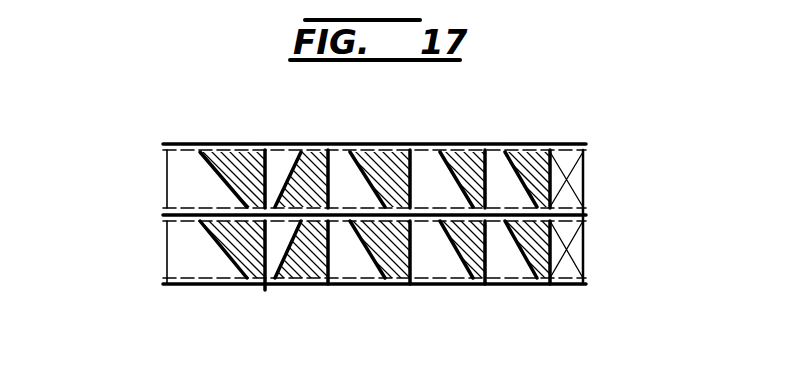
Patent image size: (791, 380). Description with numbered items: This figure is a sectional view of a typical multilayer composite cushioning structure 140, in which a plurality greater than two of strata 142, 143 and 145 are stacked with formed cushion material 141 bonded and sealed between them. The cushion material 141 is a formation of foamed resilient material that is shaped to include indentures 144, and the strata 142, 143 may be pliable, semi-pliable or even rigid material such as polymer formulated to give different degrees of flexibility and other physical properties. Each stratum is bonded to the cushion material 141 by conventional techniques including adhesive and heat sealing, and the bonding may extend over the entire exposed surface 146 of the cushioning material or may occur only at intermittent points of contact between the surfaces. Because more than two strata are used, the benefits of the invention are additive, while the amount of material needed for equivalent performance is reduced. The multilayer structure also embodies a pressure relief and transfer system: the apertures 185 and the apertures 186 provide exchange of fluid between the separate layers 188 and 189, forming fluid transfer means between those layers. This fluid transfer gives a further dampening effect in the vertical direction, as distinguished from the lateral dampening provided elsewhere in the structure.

The cushioning structure 140 is at (183, 134).
The foamed resilient material 141 is at (240, 195).
The stratum 142 is at (336, 145).
The stratum 143 is at (590, 235).
The indentures 144 is at (430, 185).
The stratum 145 is at (580, 146).
The exposed surface 146 is at (585, 182).
The apertures 185 is at (187, 207).
The apertures 186 is at (262, 265).
The separate layer 188 is at (158, 168).
The separate layer 189 is at (156, 251).